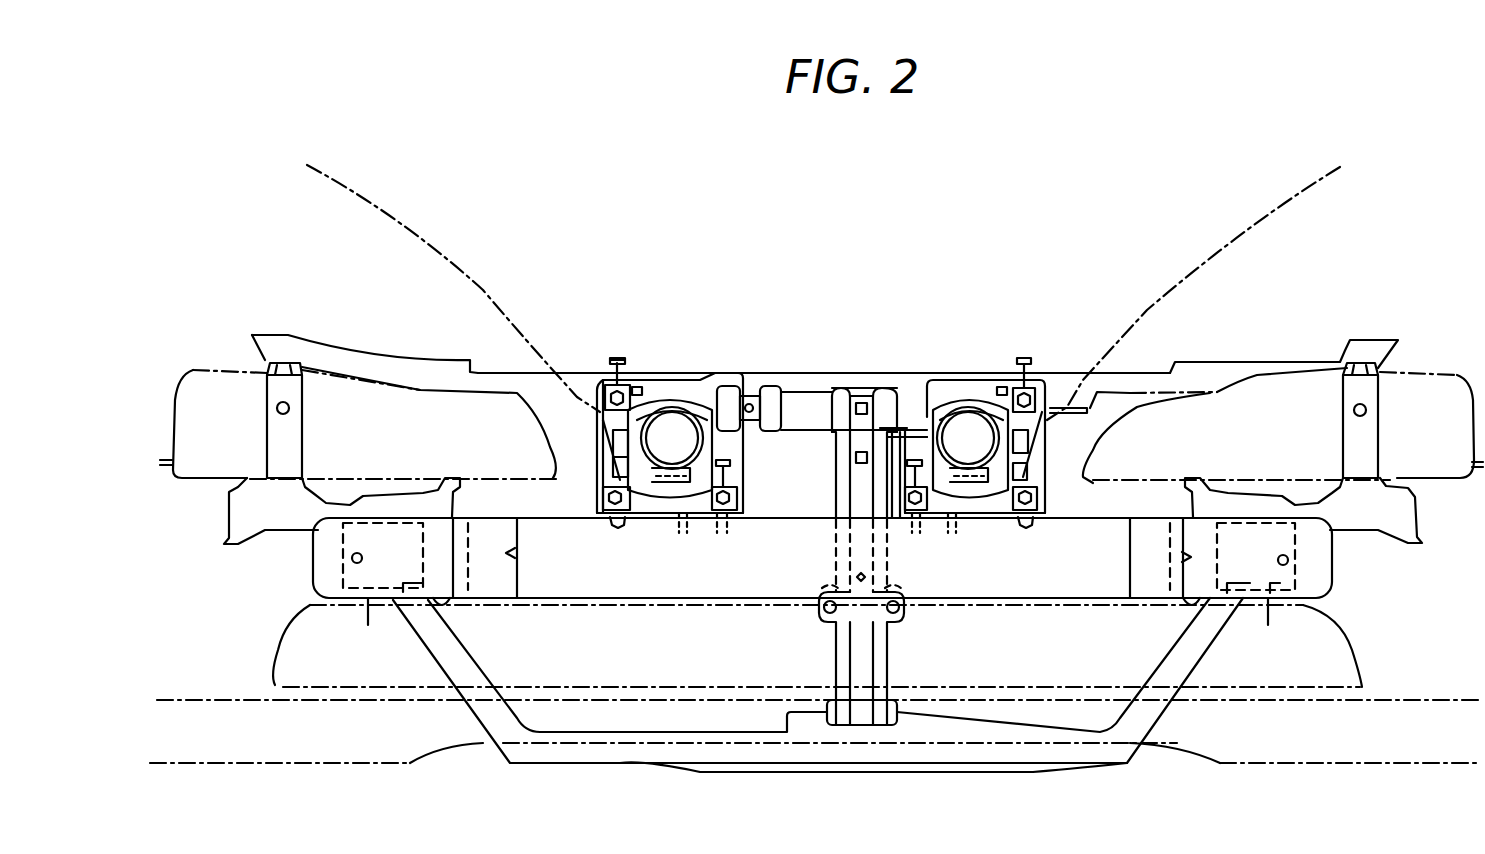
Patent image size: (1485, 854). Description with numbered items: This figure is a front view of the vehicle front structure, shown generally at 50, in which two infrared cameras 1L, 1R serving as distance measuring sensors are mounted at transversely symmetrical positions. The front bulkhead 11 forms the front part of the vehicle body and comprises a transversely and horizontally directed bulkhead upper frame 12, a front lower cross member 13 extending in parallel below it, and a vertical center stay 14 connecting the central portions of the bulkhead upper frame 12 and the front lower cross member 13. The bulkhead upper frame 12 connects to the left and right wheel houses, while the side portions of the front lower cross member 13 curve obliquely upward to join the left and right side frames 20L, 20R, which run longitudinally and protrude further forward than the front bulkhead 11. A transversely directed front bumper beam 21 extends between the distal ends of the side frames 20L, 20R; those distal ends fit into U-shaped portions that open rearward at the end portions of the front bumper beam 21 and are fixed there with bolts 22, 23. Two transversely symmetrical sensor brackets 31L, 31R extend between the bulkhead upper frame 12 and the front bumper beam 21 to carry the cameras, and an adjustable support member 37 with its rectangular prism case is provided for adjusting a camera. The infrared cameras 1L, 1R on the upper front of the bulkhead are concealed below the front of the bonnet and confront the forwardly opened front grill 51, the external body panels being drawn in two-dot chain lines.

The infrared camera 1R is at (670, 382).
The infrared camera 1L is at (978, 380).
The front bulkhead 11 is at (860, 343).
The bulkhead upper frame 12 is at (838, 375).
The front lower cross member 13 is at (878, 758).
The center stay 14 is at (860, 642).
The side frame 20R is at (312, 590).
The side frame 20L is at (1337, 590).
The front bumper beam 21 is at (740, 588).
The bolt 22 is at (352, 558).
The bolt 23 is at (420, 580).
The sensor bracket 31R is at (600, 380).
The sensor bracket 31L is at (1053, 380).
The adjustable support member 37 is at (930, 383).
The headlamp mounting structure 50 is at (720, 277).
The front grill 51 is at (807, 430).